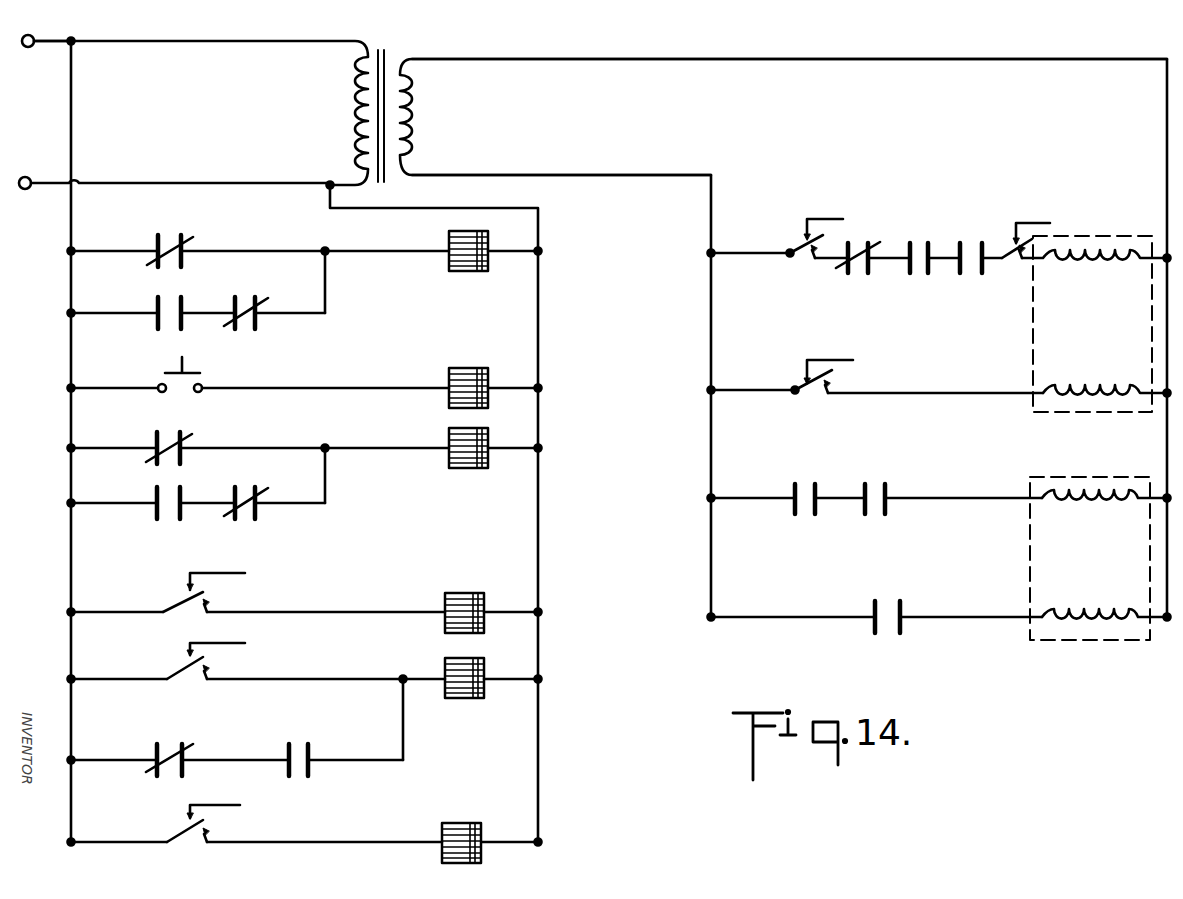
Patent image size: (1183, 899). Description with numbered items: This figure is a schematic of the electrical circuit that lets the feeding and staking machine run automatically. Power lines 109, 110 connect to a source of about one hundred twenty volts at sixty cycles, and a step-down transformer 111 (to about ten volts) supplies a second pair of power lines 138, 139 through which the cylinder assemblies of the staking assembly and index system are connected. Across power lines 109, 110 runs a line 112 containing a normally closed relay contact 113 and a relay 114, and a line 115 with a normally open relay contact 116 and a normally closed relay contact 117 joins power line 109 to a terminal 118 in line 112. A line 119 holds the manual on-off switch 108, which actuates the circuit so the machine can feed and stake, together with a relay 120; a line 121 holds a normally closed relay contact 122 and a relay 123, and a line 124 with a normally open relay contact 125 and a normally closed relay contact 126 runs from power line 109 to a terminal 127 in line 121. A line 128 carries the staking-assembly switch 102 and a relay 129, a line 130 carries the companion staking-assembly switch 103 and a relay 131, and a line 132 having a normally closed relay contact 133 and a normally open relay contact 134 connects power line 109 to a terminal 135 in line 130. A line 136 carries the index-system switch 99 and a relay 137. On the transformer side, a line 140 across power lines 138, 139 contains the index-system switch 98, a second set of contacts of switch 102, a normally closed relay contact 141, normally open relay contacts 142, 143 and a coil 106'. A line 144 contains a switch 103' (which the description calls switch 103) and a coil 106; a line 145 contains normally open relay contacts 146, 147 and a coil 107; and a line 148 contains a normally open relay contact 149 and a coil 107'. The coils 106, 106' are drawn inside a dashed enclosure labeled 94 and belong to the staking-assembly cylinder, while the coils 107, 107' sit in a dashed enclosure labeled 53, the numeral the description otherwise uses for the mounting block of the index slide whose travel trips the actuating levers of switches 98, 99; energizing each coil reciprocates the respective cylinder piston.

The power line 109 is at (52, 48).
The power line 110 is at (41, 182).
The transformer 111 is at (411, 54).
The power line 138 is at (580, 58).
The power line 139 is at (580, 176).
The line 112 is at (106, 251).
The normally closed relay contact 113 is at (172, 243).
The terminal 118 is at (329, 235).
The line 115 is at (126, 313).
The normally open relay contact 116 is at (190, 296).
The normally closed relay contact 117 is at (248, 306).
The line 119 is at (130, 390).
The manual on-off switch 108 is at (192, 371).
The relay 114 is at (450, 265).
The relay 120 is at (450, 376).
The line 121 is at (128, 446).
The normally closed relay contact 122 is at (182, 438).
The terminal 127 is at (327, 446).
The relay 123 is at (450, 442).
The line 124 is at (120, 493).
The normally open relay contact 125 is at (168, 518).
The normally closed relay contact 126 is at (250, 493).
The line 128 is at (122, 604).
The switch 102 is at (240, 565).
The relay 129 is at (446, 600).
The line 130 is at (122, 670).
The switch 103 is at (230, 661).
The terminal 135 is at (400, 677).
The relay 131 is at (447, 668).
The line 132 is at (118, 750).
The normally closed relay contact 133 is at (176, 748).
The normally open relay contact 134 is at (300, 748).
The line 136 is at (108, 842).
The switch 99 is at (225, 812).
The relay 137 is at (444, 836).
The line 140 is at (758, 248).
The switch 98 is at (829, 222).
The normally closed relay contact 141 is at (858, 240).
The normally open relay contact 142 is at (921, 240).
The normally open relay contact 143 is at (972, 240).
The coil 106' is at (1094, 228).
The solenoid valve 94 is at (1048, 313).
The line 144 is at (764, 380).
The limit switch 103' is at (836, 352).
The coil 106 is at (1105, 369).
The line 145 is at (754, 496).
The normally open relay contact 146 is at (808, 514).
The normally open relay contact 147 is at (876, 516).
The mounting block 53 is at (1040, 565).
The coil 107' is at (1104, 519).
The line 148 is at (812, 606).
The coil 107 is at (1104, 592).
The normally open relay contact 149 is at (890, 636).